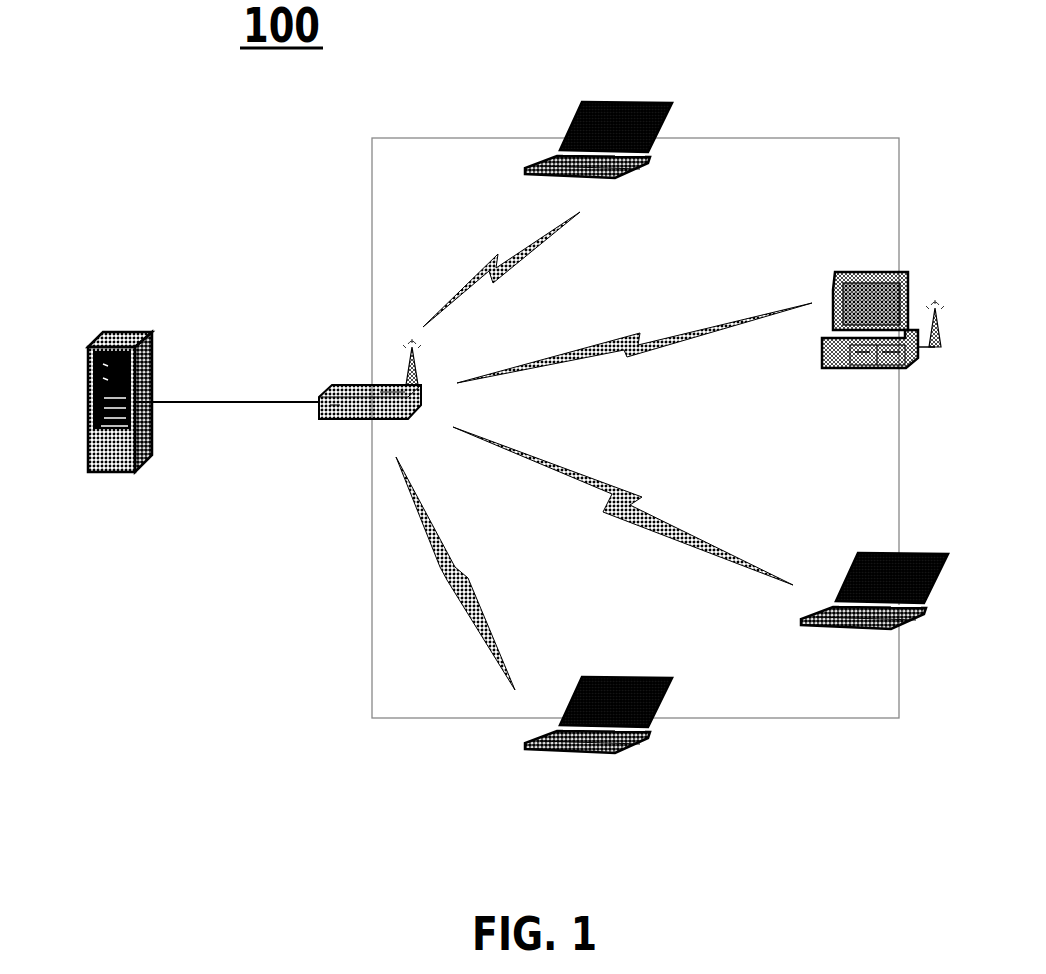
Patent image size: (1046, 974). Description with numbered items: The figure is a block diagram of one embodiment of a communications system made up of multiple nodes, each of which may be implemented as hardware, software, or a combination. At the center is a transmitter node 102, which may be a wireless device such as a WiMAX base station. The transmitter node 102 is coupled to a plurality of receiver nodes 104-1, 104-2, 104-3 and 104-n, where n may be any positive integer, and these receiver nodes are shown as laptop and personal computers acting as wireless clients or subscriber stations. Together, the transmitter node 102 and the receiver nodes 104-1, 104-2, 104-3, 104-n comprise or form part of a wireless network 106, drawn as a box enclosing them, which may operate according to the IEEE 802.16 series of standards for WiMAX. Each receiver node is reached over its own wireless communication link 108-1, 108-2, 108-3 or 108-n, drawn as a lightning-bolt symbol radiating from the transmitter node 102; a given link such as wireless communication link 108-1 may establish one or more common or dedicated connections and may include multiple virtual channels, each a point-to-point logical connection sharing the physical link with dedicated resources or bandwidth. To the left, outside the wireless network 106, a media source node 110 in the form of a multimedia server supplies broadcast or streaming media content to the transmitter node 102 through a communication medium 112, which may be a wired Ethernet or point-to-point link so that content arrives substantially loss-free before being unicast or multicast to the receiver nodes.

The transmitter node 102 is at (366, 389).
The receiver node 104-1 is at (583, 150).
The receiver node 104-2 is at (868, 330).
The receiver node 104-3 is at (860, 600).
The receiver node 104-n is at (584, 726).
The wireless network 106 is at (807, 138).
The wireless communication link 108-1 is at (494, 257).
The wireless communication link 108-2 is at (622, 337).
The wireless communication link 108-3 is at (627, 490).
The wireless communication link 108-n is at (440, 578).
The media source node 110 is at (118, 330).
The communication medium 112 is at (246, 402).